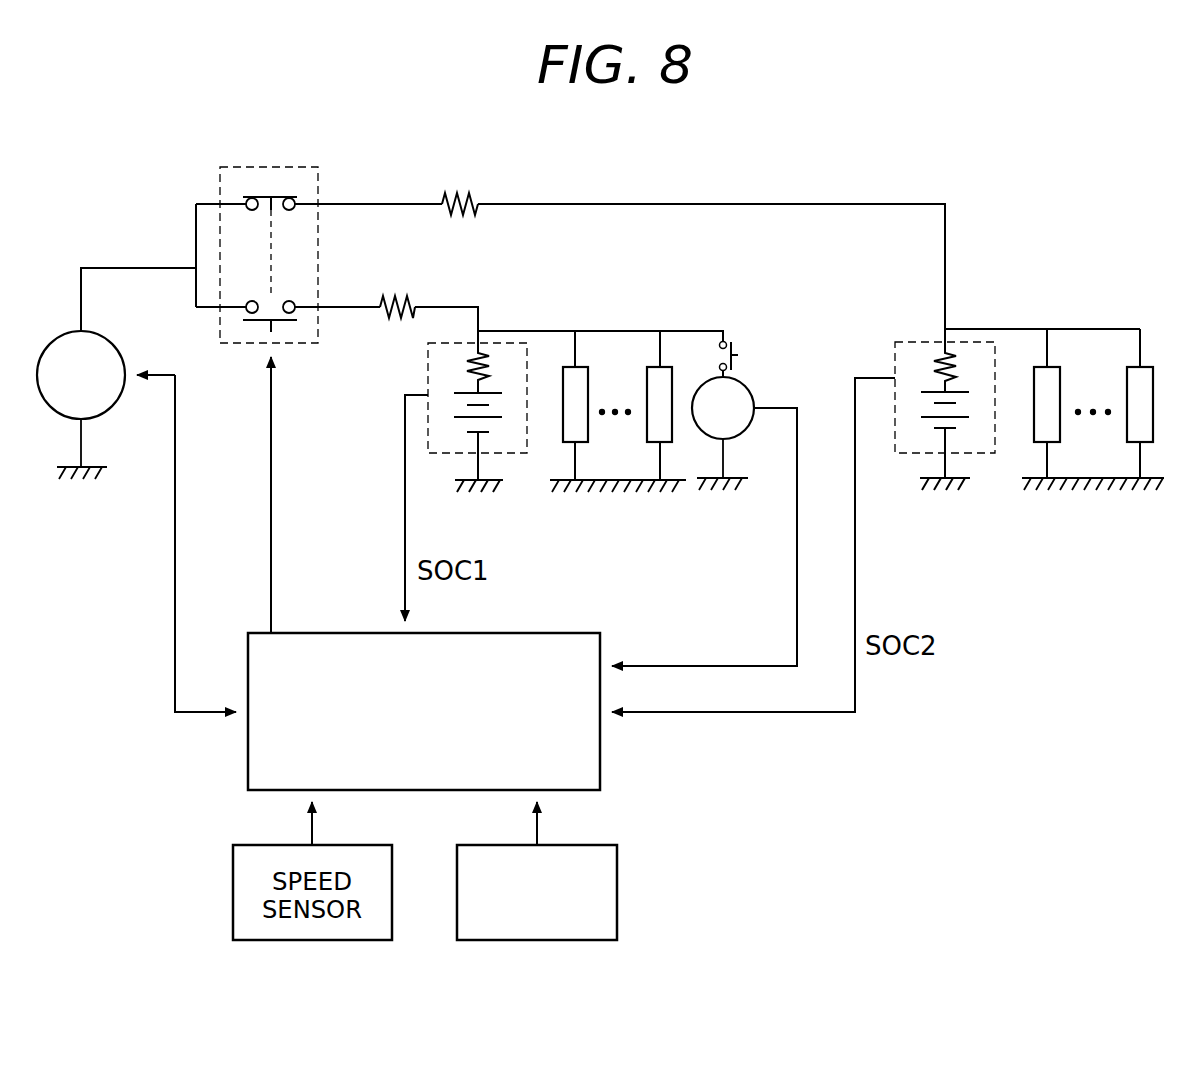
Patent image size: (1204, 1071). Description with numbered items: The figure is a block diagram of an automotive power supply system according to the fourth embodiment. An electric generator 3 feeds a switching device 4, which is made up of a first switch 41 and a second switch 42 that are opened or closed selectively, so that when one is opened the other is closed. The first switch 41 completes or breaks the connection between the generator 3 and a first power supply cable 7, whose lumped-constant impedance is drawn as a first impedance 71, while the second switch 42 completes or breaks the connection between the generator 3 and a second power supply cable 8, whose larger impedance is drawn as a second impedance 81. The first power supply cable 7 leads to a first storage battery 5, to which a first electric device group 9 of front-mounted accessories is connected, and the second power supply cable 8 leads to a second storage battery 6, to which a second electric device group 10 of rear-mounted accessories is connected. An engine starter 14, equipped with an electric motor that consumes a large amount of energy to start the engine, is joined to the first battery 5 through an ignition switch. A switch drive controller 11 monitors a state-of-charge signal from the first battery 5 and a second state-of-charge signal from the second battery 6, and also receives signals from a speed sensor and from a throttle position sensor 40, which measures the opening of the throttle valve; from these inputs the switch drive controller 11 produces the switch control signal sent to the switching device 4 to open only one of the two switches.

The electric generator 3 is at (55, 337).
The switching device 4 is at (319, 371).
The first switch 41 is at (258, 331).
The second switch 42 is at (271, 196).
The first storage battery 5 is at (428, 378).
The second storage battery 6 is at (905, 342).
The first power supply cable 7 is at (470, 306).
The first impedance 71 is at (398, 292).
The second power supply cable 8 is at (580, 203).
The second impedance 81 is at (455, 190).
The first electric device group 9 is at (600, 368).
The second electric device group 10 is at (1163, 364).
The switch drive controller 11 is at (572, 633).
The engine starter 14 is at (745, 386).
The throttle position sensor 40 is at (617, 877).